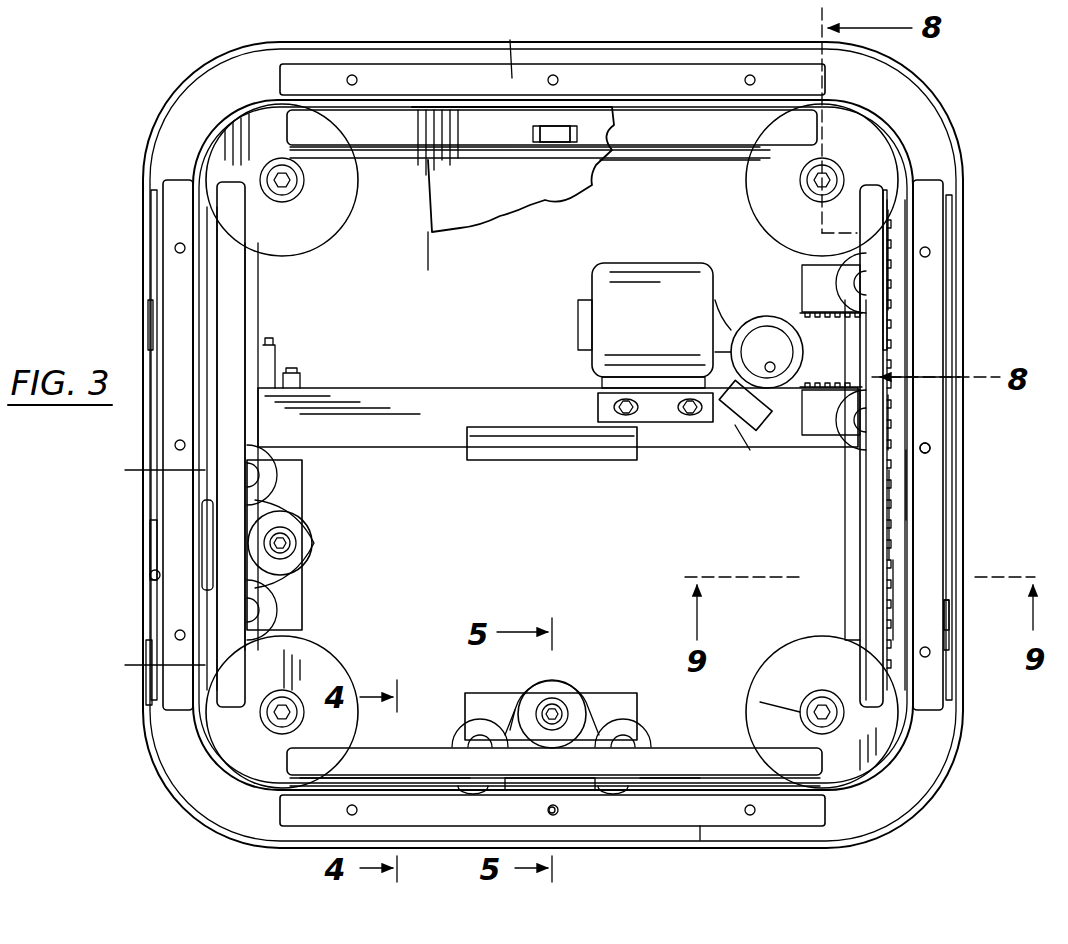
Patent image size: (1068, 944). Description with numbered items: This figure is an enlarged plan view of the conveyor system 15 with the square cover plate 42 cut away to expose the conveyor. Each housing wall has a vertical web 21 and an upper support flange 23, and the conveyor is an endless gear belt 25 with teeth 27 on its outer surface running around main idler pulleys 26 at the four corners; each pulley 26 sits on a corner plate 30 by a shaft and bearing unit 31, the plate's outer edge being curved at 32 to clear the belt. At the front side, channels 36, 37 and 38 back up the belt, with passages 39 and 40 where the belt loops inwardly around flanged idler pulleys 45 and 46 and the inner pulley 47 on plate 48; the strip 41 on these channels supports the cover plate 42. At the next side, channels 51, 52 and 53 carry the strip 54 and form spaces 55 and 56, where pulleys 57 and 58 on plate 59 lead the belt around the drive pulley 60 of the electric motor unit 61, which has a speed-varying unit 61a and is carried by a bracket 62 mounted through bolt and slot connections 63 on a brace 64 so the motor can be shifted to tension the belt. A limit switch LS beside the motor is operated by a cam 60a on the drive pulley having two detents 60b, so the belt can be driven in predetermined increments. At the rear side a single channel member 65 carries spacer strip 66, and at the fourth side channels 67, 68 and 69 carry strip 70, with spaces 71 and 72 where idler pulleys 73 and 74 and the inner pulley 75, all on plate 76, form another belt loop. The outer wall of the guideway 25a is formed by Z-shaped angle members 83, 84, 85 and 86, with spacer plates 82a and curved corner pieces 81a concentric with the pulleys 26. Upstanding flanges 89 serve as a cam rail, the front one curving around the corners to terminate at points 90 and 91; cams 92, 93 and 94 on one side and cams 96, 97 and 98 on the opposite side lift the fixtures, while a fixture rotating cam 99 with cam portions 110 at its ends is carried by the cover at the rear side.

The conveyor system 15 is at (900, 540).
The vertical web 21 is at (845, 535).
The upper support flange 23 is at (255, 312).
The endless gear belt 25 is at (838, 318).
The guideway 25a is at (672, 96).
The main idler pulley 26 is at (330, 232).
The teeth 27 is at (910, 478).
The corner plate 30 is at (855, 790).
The shaft and bearing unit 31 is at (760, 702).
The curved edge 32 is at (930, 748).
The backup channel 36 is at (390, 786).
The intermediate channel 37 is at (582, 790).
The backup channel 38 is at (692, 786).
The belt passage 39 is at (490, 790).
The belt passage 40 is at (612, 790).
The longitudinal strip 41 is at (428, 760).
The cover plate 42 is at (497, 230).
The flanged idler pulley 45 is at (505, 725).
The flanged idler pulley 46 is at (645, 735).
The flanged idler pulley 47 is at (555, 700).
The pulley plate 48 is at (630, 693).
The channel 51 is at (895, 622).
The outwardly offset channel 52 is at (885, 338).
The channel 53 is at (900, 230).
The strip 54 is at (860, 597).
The belt-passage space 55 is at (900, 400).
The belt-passage space 56 is at (900, 292).
The pulley 57 is at (842, 438).
The pulley 58 is at (836, 283).
The plate 59 is at (815, 440).
The drive pulley 60 is at (763, 325).
The cam 60a is at (735, 318).
The detents 60b is at (730, 345).
The electric motor unit 61 is at (592, 285).
The speed-varying unit 61a is at (508, 460).
The bracket 62 is at (655, 422).
The bolt and slot connections 63 is at (735, 435).
The limit switch LS is at (745, 445).
The brace 64 is at (416, 448).
The channel member 65 is at (662, 112).
The spacer strip 66 is at (748, 135).
The end backup channel 67 is at (212, 345).
The outwardly offset channel 68 is at (150, 548).
The end backup channel 69 is at (146, 663).
The spacer strip 70 is at (237, 277).
The belt-passage space 71 is at (151, 475).
The belt-passage space 72 is at (200, 605).
The flanged idler pulley 73 is at (278, 482).
The flanged idler pulley 74 is at (278, 604).
The flanged idler pulley 75 is at (314, 540).
The plate 76 is at (300, 590).
The curved corner pieces 81a is at (920, 776).
The spacer-plate 82a is at (516, 45).
The Z-shaped angle member 83 is at (735, 828).
The angle member 84 is at (950, 660).
The angle member 85 is at (538, 60).
The angle member 86 is at (152, 278).
The upstanding flange 89 is at (420, 60).
The terminal point 90 is at (950, 690).
The terminal point 91 is at (148, 680).
The cam member 92 is at (948, 632).
The cam member 93 is at (930, 452).
The cam member 94 is at (930, 272).
The upstanding cam 96 is at (160, 296).
The upstanding cam 97 is at (150, 335).
The upstanding cam 98 is at (148, 575).
The fixture rotating cam 99 is at (555, 142).
The cam portions 110 is at (533, 134).